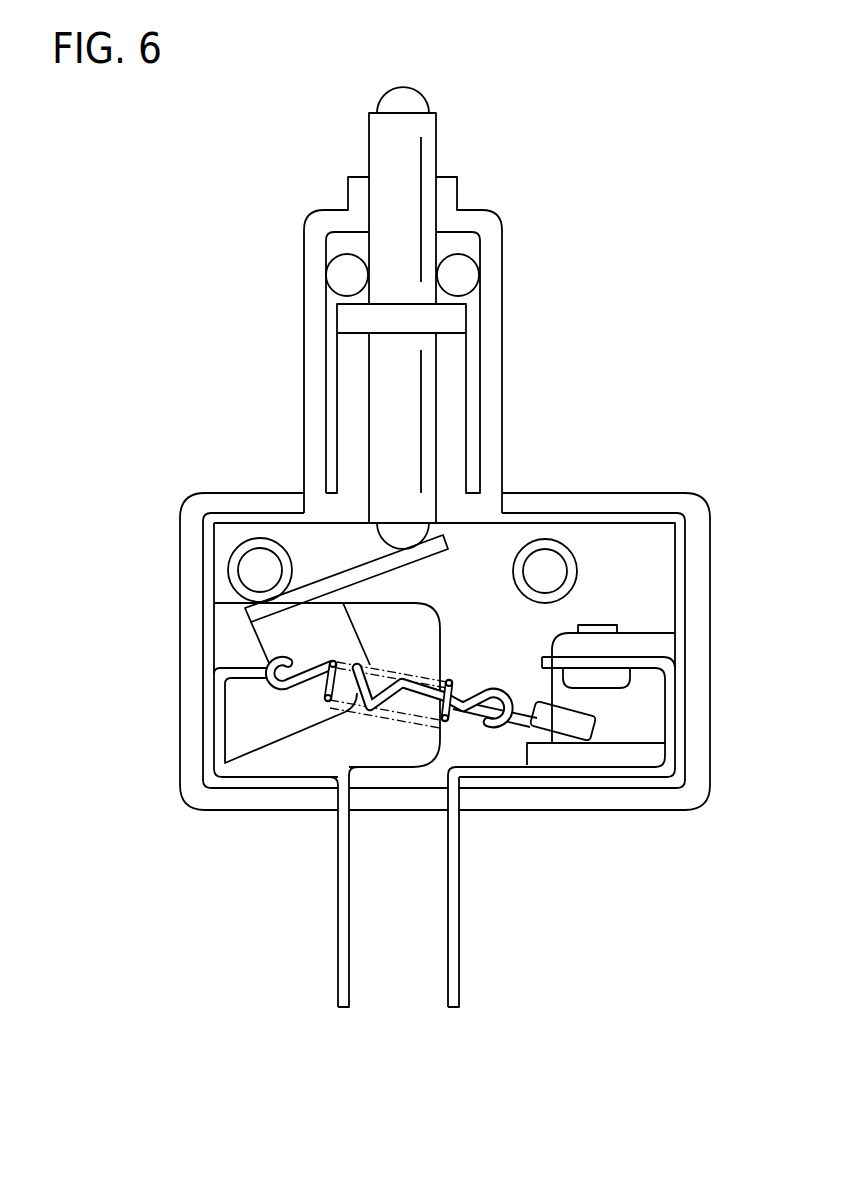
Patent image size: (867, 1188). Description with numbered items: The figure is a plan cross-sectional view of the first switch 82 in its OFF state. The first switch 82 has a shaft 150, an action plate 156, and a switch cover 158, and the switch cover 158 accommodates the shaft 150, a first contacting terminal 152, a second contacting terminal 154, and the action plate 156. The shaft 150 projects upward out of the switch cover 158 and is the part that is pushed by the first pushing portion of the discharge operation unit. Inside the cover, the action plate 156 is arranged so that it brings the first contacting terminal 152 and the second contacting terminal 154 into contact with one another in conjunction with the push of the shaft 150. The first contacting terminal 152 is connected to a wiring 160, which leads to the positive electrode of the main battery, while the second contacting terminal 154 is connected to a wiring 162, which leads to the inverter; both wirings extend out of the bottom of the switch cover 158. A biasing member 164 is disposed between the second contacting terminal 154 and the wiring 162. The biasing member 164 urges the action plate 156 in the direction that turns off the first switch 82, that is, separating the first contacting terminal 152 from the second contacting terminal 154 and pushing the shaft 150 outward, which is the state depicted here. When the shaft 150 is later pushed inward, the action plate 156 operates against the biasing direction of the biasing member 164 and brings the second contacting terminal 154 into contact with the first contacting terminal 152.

The first switch 82 is at (642, 890).
The shaft 150 is at (388, 152).
The first contacting terminal 152 is at (598, 677).
The second contacting terminal 154 is at (587, 720).
The action plate 156 is at (282, 643).
The switch cover 158 is at (317, 405).
The wiring 160 is at (453, 925).
The wiring 162 is at (343, 907).
The biasing member 164 is at (460, 667).